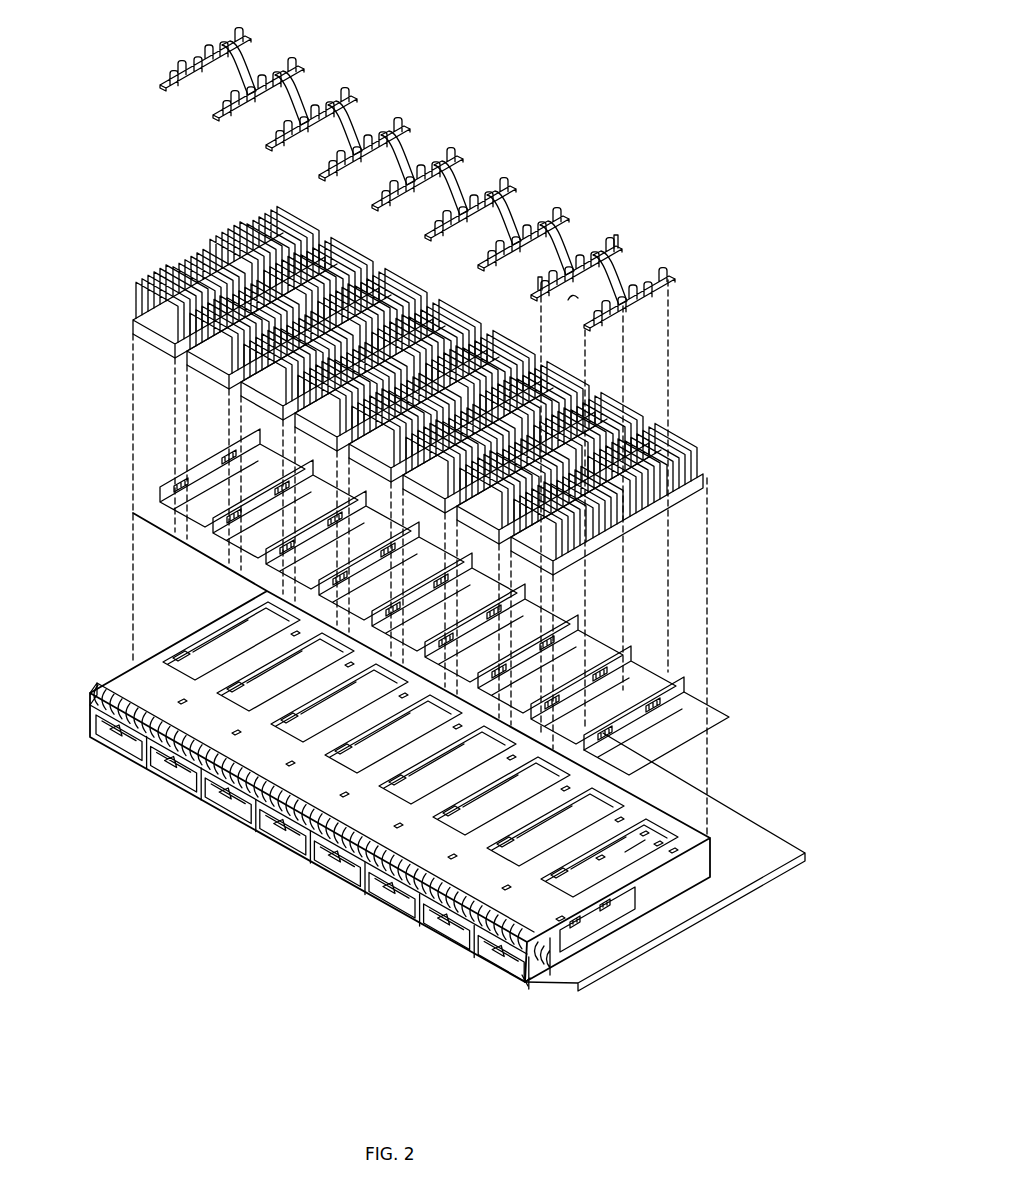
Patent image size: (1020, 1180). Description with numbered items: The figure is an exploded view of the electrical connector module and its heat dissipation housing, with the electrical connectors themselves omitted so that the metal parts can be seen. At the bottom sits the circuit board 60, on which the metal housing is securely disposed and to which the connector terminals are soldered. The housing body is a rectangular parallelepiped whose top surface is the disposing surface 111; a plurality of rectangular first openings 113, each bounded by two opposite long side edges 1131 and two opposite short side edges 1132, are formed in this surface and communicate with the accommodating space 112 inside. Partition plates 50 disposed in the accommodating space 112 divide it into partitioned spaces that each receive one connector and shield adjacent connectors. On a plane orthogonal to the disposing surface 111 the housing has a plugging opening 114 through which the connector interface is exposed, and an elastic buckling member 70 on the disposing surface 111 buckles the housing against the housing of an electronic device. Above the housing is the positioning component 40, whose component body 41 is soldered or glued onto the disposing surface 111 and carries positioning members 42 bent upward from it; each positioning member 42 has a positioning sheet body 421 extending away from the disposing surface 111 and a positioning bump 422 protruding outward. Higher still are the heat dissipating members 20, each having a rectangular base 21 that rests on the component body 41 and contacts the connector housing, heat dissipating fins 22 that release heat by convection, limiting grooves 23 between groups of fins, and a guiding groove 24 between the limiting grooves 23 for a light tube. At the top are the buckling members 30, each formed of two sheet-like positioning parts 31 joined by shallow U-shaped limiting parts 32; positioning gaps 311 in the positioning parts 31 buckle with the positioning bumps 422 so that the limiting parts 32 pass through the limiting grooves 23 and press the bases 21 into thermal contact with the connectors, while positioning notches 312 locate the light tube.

The heat dissipating member 20 is at (383, 478).
The base 21 is at (142, 318).
The heat dissipating fins 22 is at (162, 282).
The limiting groove 23 is at (190, 272).
The guiding groove 24 is at (207, 255).
The buckling member 30 is at (465, 432).
The positioning part 31 is at (670, 273).
The limiting part 32 is at (627, 280).
The positioning gap 311 is at (617, 247).
The positioning notch 312 is at (572, 297).
The positioning component 40 is at (481, 602).
The component body 41 is at (620, 730).
The positioning member 42 is at (676, 704).
The positioning sheet body 421 is at (684, 684).
The positioning bump 422 is at (682, 688).
The partition plate 50 is at (458, 938).
The circuit board 60 is at (727, 830).
The elastic buckling member 70 is at (440, 903).
The disposing surface 111 is at (547, 912).
The accommodating space 112 is at (503, 937).
The first opening 113 is at (643, 842).
The long side edge 1131 is at (600, 857).
The short side edge 1132 is at (657, 843).
The plugging opening 114 is at (525, 982).